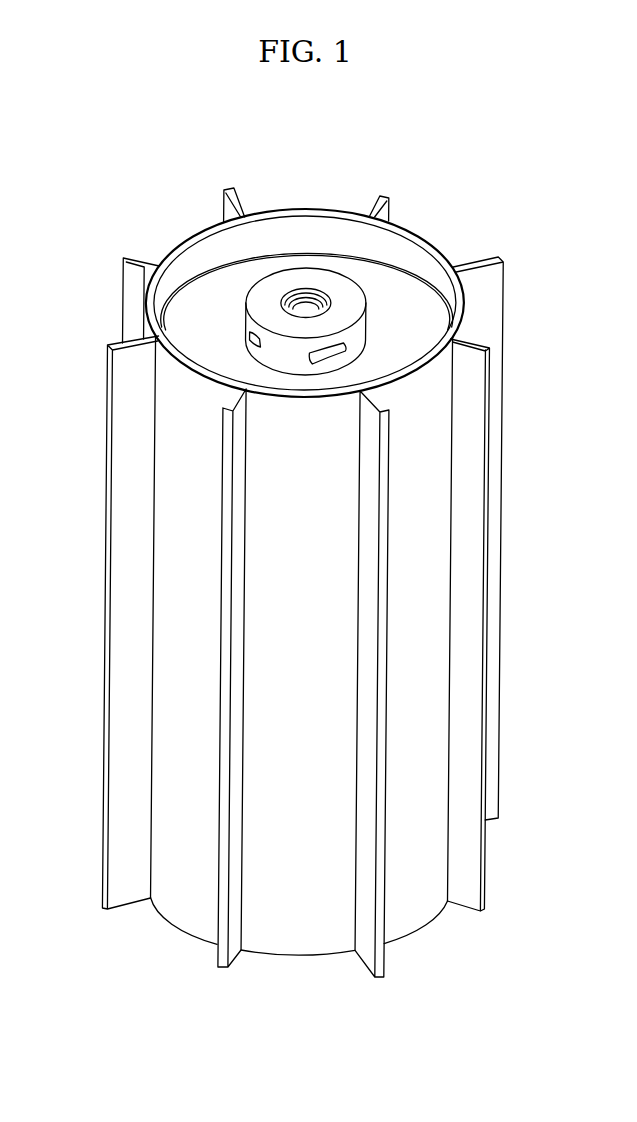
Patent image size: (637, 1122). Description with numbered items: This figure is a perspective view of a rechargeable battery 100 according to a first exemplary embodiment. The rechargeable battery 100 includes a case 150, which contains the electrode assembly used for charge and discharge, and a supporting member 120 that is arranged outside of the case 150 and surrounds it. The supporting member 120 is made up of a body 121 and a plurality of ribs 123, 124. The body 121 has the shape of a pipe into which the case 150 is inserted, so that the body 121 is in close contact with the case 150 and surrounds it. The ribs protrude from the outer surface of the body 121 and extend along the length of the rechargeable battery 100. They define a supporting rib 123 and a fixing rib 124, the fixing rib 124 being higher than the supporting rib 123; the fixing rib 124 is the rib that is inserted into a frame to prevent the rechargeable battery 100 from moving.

The rechargeable battery 100 is at (339, 189).
The supporting member 120 is at (198, 226).
The body 121 is at (148, 292).
The supporting rib 123 is at (125, 257).
The fixing rib 124 is at (119, 343).
The case 150 is at (402, 285).